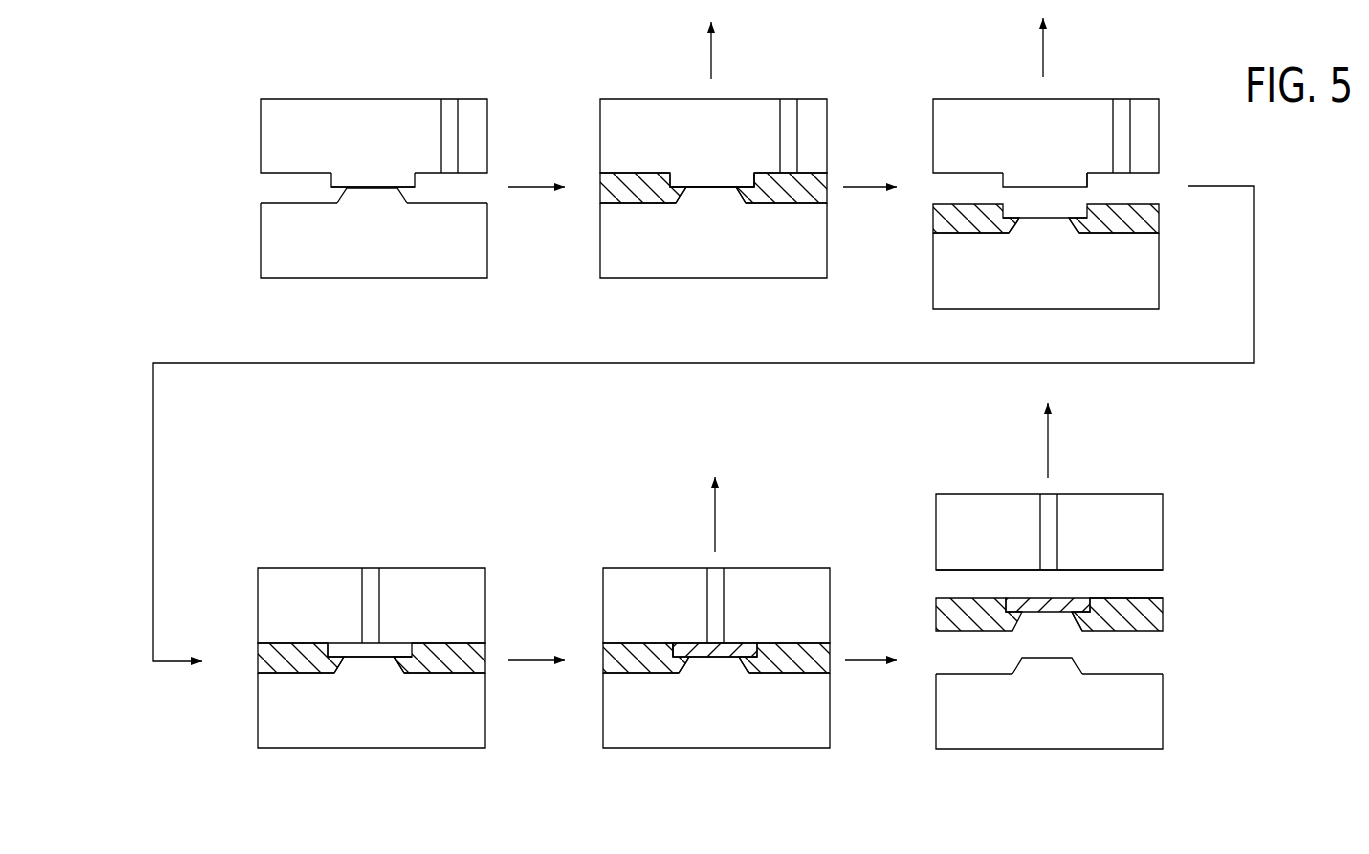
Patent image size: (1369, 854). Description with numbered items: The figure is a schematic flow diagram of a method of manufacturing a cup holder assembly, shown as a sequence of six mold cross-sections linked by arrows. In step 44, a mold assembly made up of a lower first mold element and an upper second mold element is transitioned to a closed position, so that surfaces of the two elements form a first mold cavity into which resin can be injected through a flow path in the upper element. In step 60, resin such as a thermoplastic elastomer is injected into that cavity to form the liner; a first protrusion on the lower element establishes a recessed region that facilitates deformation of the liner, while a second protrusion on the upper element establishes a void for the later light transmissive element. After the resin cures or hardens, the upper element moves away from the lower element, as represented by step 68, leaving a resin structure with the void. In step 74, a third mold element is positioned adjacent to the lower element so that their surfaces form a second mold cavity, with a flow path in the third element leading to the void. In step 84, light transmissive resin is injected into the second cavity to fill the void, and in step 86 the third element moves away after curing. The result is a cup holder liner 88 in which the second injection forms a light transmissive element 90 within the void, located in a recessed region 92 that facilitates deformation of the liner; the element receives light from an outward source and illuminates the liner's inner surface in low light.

The step 44 is at (392, 74).
The step 60 is at (732, 75).
The step 68 is at (1066, 77).
The step 74 is at (391, 544).
The step 84 is at (737, 545).
The step 86 is at (1069, 469).
The cup holder liner 88 is at (1162, 636).
The light transmissive element 90 is at (1093, 610).
The recessed region 92 is at (1073, 628).